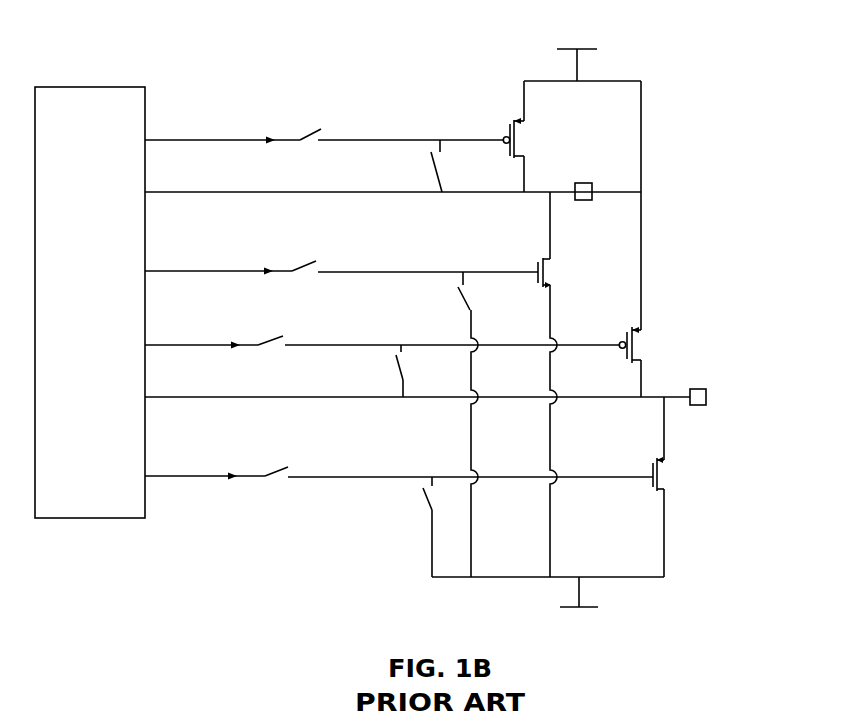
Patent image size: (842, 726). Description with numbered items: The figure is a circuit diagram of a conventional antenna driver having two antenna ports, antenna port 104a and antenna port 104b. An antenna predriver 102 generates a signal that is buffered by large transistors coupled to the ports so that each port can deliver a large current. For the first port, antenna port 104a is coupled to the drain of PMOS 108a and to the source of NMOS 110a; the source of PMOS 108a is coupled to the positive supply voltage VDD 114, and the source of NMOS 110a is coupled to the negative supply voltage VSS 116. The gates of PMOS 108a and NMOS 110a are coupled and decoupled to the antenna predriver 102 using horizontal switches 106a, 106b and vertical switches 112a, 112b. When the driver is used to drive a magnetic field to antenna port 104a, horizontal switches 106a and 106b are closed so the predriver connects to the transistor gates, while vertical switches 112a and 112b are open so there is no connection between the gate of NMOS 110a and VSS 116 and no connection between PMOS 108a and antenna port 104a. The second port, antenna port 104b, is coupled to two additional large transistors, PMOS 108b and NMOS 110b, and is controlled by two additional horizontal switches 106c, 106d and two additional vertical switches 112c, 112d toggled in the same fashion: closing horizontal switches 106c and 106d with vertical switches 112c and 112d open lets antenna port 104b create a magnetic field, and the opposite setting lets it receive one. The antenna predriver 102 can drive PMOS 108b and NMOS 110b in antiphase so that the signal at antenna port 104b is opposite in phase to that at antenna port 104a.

The antenna predriver 102 is at (80, 87).
The antenna port 104a is at (648, 192).
The antenna port 104b is at (706, 397).
The horizontal switch 106a is at (303, 122).
The horizontal switch 106b is at (304, 256).
The horizontal switch 106c is at (262, 328).
The horizontal switch 106d is at (268, 461).
The PMOS transistor 108a is at (549, 133).
The PMOS transistor 108b is at (666, 338).
The NMOS transistor 110a is at (575, 270).
The NMOS transistor 110b is at (690, 466).
The vertical switch 112a is at (412, 167).
The vertical switch 112b is at (440, 297).
The vertical switch 112c is at (375, 372).
The vertical switch 112d is at (414, 500).
The positive supply voltage VDD 114 is at (579, 26).
The negative supply voltage VSS 116 is at (602, 625).